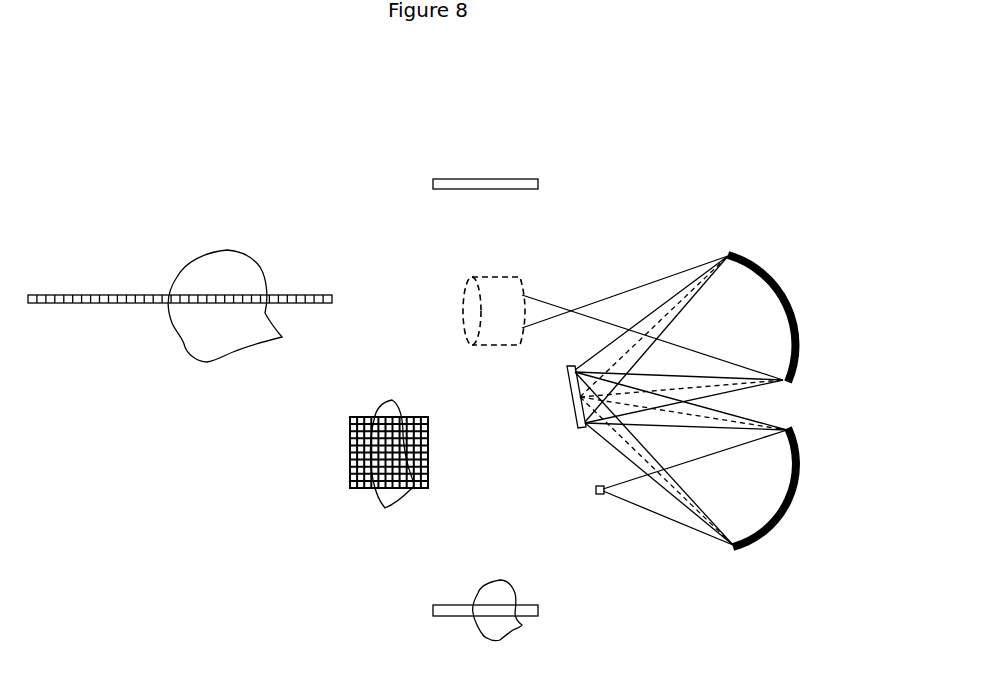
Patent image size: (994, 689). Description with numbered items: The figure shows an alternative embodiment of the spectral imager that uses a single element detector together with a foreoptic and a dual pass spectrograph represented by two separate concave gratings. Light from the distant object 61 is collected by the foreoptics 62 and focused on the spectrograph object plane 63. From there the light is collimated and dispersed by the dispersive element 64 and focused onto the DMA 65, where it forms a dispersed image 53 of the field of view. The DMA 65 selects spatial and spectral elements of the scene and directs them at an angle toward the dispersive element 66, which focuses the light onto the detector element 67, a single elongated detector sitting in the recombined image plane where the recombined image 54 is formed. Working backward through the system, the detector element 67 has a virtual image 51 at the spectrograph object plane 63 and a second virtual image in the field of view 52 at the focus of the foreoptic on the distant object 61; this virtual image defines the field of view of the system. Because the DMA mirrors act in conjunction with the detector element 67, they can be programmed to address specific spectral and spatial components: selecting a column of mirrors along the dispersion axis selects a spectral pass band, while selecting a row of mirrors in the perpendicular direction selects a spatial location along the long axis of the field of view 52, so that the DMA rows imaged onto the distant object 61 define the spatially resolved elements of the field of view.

The virtual image 51 is at (572, 302).
The field of view 52 is at (78, 313).
The dispersed image 53 is at (565, 422).
The recombined image 54 is at (577, 498).
The distant object 61 is at (255, 288).
The foreoptics 62 is at (482, 276).
The spectrograph object plane 63 is at (580, 302).
The dispersive element 64 is at (808, 306).
The DMA 65 is at (563, 393).
The dispersive element 66 is at (815, 487).
The detector element 67 is at (599, 499).